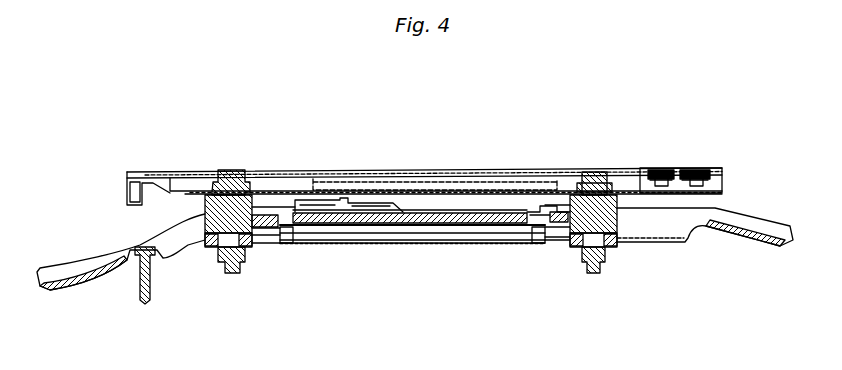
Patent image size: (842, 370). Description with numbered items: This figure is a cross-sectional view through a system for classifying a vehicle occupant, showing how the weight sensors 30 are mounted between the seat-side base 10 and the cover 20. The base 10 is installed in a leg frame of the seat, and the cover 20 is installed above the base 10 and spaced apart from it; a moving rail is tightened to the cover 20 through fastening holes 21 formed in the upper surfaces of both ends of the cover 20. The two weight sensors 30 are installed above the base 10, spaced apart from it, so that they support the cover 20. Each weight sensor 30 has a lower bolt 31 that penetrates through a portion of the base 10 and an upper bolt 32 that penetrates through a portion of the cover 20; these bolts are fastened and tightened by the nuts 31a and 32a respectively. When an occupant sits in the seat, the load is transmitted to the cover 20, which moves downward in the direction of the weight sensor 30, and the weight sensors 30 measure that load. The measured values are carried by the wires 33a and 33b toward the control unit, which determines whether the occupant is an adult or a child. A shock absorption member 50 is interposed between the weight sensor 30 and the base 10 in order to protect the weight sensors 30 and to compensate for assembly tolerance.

The base 10 is at (377, 249).
The cover 20 is at (399, 162).
The fastening holes 21 is at (697, 167).
The weight sensor 30 is at (203, 247).
The lower bolt 31 is at (585, 270).
The nut 31a is at (240, 260).
The upper bolt 32 is at (595, 168).
The nut 32a is at (577, 170).
The wire 33a is at (280, 237).
The wire 33b is at (545, 237).
The shock absorption member 50 is at (615, 246).